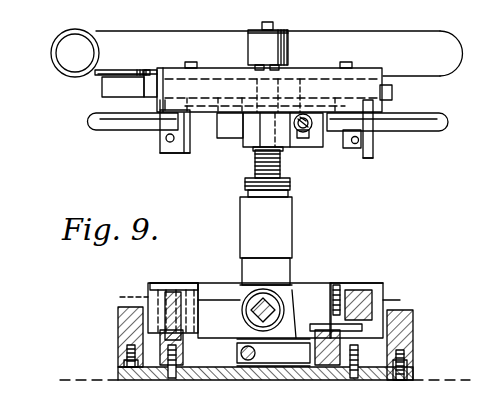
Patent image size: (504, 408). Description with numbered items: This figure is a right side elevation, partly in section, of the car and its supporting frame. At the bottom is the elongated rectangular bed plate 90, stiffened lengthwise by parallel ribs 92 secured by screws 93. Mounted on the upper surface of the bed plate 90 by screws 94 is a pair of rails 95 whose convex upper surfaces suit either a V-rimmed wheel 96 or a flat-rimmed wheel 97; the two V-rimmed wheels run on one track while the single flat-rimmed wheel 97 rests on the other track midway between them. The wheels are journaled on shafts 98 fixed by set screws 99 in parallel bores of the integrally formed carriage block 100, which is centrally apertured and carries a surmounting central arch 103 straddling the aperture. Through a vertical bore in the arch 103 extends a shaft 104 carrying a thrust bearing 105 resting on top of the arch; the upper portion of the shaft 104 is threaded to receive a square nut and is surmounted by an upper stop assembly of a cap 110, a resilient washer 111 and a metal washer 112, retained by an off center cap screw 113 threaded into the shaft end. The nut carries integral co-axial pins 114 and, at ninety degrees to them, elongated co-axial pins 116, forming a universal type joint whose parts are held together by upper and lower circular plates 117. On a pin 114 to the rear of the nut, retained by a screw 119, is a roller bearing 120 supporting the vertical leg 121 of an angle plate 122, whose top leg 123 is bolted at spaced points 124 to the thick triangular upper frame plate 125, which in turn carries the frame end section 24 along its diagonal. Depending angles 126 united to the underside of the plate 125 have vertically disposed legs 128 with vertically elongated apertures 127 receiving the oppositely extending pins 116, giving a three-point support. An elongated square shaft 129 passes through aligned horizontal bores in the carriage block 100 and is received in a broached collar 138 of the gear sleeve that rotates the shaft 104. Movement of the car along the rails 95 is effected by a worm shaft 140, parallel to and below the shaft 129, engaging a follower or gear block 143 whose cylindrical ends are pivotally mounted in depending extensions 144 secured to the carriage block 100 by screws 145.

The frame end section 24 is at (104, 31).
The bed plate 90 is at (413, 380).
The ribs 92 is at (118, 312).
The screws 93 is at (126, 357).
The screws 94 is at (192, 397).
The rails 95 is at (145, 368).
The V-rimmed wheel 96 is at (150, 283).
The flat-rimmed wheel 97 is at (355, 283).
The shafts 98 is at (145, 297).
The set screws 99 is at (204, 282).
The carriage block 100 is at (238, 240).
The central arch 103 is at (291, 218).
The shaft 104 is at (254, 162).
The thrust bearing 105 is at (245, 185).
The cap 110 is at (289, 45).
The resilient washer 111 is at (248, 36).
The metal washer 112 is at (286, 31).
The off center cap screw 113 is at (260, 24).
The pins 114 is at (285, 150).
The pins 116 is at (100, 131).
The circular plates 117 is at (243, 132).
The screw 119 is at (308, 118).
The roller bearing 120 is at (302, 133).
The vertical leg 121 is at (393, 92).
The angle plate 122 is at (383, 70).
The top leg 123 is at (162, 69).
The spaced points 124 is at (190, 61).
The upper frame plate 125 is at (101, 88).
The depending angles 126 is at (158, 157).
The vertically elongated apertures 127 is at (165, 136).
The vertically disposed legs 128 is at (170, 154).
The square shaft 129 is at (280, 285).
The collar 138 is at (296, 290).
The worm shaft 140 is at (246, 340).
The follower or gear block 143 is at (284, 363).
The depending extensions 144 is at (204, 330).
The screws 145 is at (218, 370).